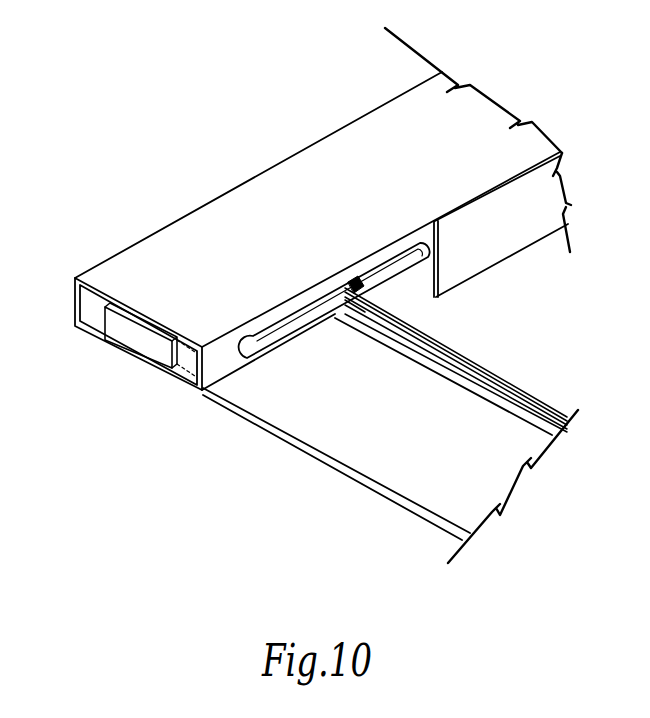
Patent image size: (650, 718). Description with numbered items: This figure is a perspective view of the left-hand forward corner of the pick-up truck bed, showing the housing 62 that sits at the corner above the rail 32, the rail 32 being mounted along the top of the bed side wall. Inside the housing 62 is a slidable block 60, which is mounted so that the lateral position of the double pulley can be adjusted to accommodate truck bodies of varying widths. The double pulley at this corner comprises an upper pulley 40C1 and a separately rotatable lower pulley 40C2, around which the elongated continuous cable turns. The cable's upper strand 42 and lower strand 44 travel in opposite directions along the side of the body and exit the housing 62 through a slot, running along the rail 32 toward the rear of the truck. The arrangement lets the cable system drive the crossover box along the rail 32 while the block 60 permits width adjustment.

The housing 62 is at (260, 168).
The slidable block 60 is at (100, 325).
The rail 32 is at (260, 428).
The upper strand 42 is at (447, 345).
The lower strand 44 is at (467, 367).
The upper pulley 40C1 is at (353, 278).
The lower pulley 40C2 is at (380, 308).